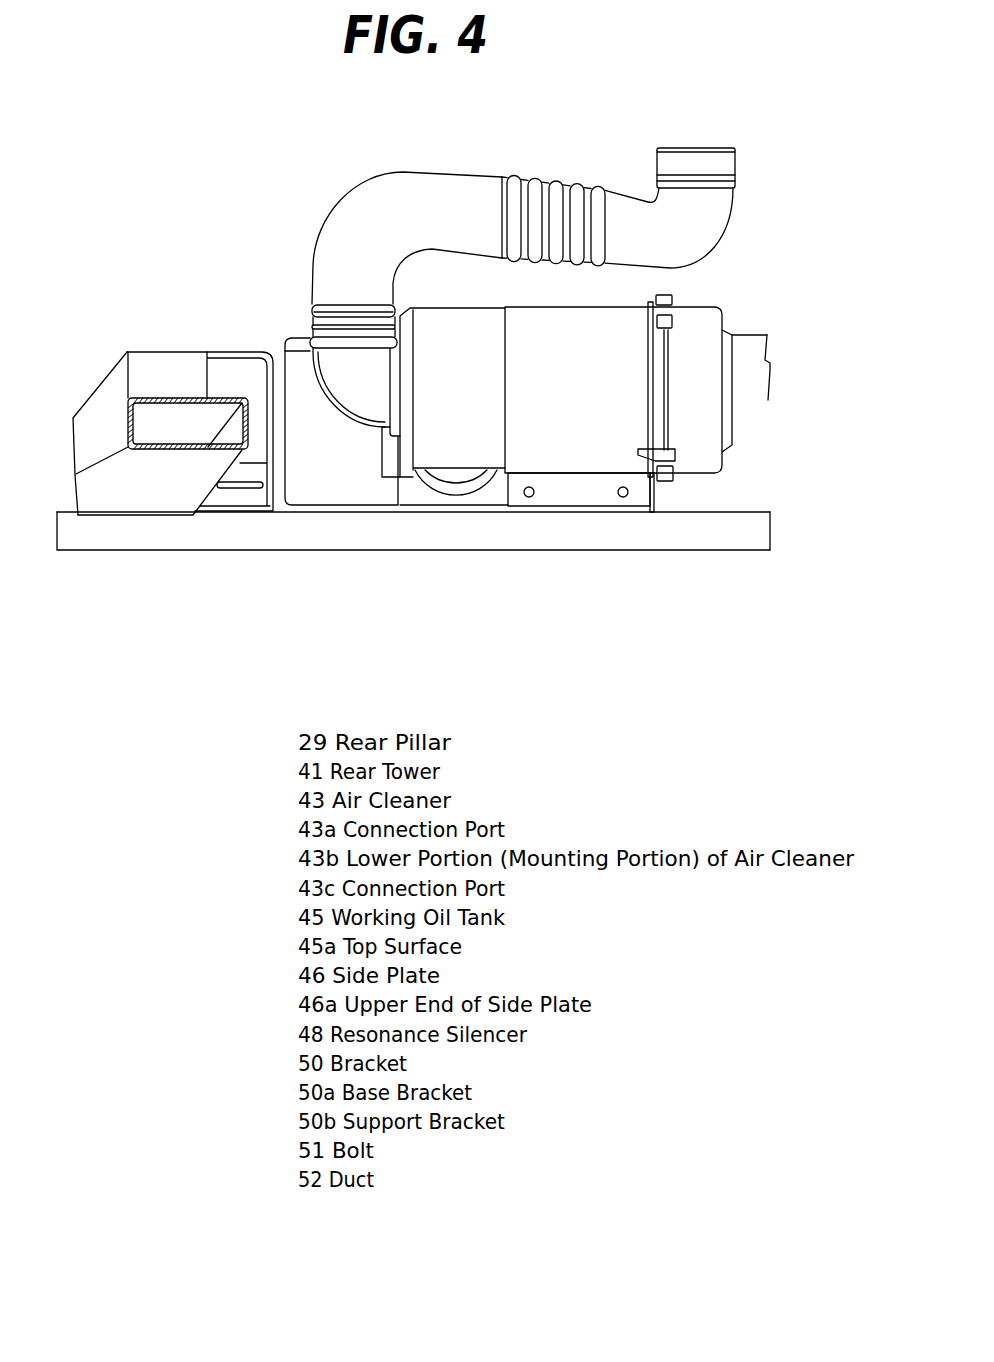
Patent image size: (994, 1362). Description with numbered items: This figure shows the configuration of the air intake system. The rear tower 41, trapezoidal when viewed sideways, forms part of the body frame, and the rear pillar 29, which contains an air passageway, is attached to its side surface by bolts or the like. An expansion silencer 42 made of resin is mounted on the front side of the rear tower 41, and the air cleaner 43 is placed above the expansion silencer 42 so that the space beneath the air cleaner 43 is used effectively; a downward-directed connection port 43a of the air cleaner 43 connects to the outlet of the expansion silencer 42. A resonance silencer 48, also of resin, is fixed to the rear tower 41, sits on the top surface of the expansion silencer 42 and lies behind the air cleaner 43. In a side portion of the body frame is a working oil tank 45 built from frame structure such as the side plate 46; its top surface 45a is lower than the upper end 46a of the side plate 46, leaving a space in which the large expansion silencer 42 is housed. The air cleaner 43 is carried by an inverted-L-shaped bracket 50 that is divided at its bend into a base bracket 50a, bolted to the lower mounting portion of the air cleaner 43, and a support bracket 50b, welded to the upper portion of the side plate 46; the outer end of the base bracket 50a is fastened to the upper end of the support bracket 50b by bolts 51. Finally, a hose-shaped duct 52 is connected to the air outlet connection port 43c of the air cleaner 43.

The rear pillar 29 is at (128, 492).
The rear tower 41 is at (97, 403).
The expansion silencer 42 is at (420, 492).
The air cleaner 43 is at (473, 433).
The connection port (air inlet) 43a is at (473, 478).
The connection port (air outlet) 43c is at (362, 400).
The working oil tank 45 is at (770, 487).
The top surface 45a is at (737, 490).
The side plate 46 is at (628, 552).
The upper end 46a is at (578, 532).
The resonance silencer 48 is at (307, 485).
The bracket 50 is at (659, 545).
The base bracket 50a is at (652, 493).
The support bracket 50b is at (660, 493).
The bolts 51 is at (626, 497).
The hose-shaped duct 52 is at (368, 205).